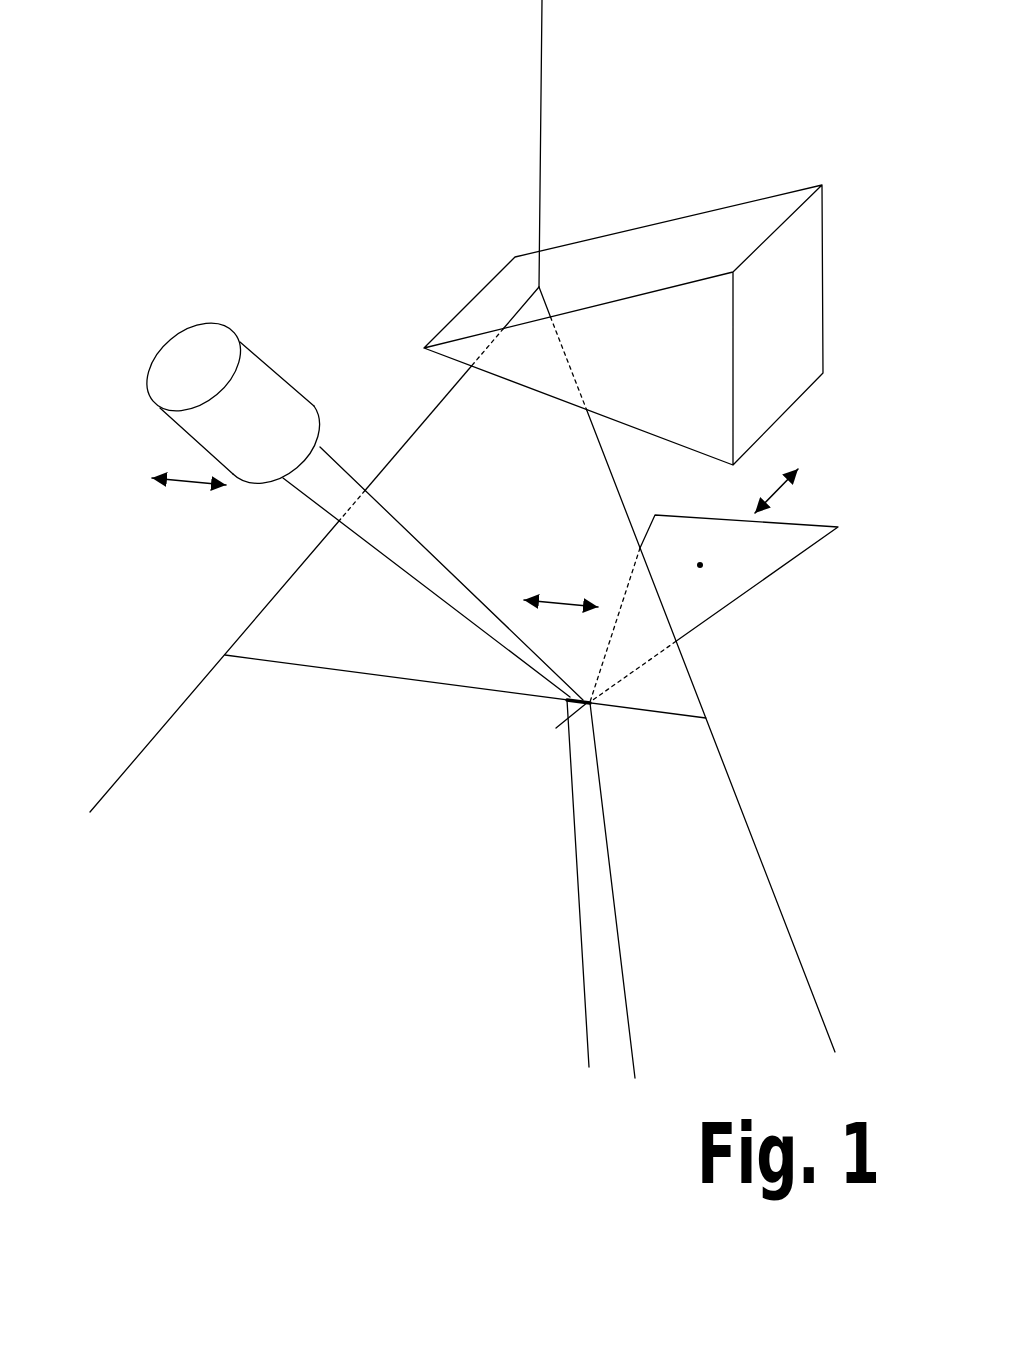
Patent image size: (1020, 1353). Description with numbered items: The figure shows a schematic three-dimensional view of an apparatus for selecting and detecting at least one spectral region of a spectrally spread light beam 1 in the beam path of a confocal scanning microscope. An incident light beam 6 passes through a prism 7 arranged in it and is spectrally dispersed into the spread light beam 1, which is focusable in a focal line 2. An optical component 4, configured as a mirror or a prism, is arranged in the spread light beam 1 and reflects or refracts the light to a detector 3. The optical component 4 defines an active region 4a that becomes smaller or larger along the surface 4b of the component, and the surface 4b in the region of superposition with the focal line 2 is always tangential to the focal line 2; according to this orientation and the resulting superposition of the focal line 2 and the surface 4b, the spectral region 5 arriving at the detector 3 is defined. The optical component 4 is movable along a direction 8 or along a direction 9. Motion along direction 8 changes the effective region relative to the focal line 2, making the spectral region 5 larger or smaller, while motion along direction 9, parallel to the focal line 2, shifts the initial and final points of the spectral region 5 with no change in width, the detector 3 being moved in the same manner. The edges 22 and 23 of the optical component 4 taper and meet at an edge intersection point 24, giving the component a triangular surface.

The spectrally spread light beam 1 is at (480, 468).
The focal line 2 is at (447, 687).
The detector 3 is at (198, 370).
The optical component 4 is at (790, 542).
The active region 4a is at (578, 704).
The surface of the optical component 4b is at (700, 565).
The spectral region 5 is at (486, 628).
The incident light beam 6 is at (542, 125).
The prism 7 is at (752, 302).
The direction of motion 8 is at (778, 490).
The direction of motion parallel to focal line 9 is at (190, 482).
The edge of optical component 22 is at (717, 613).
The edge of optical component 23 is at (648, 529).
The edge intersection point 24 is at (556, 728).